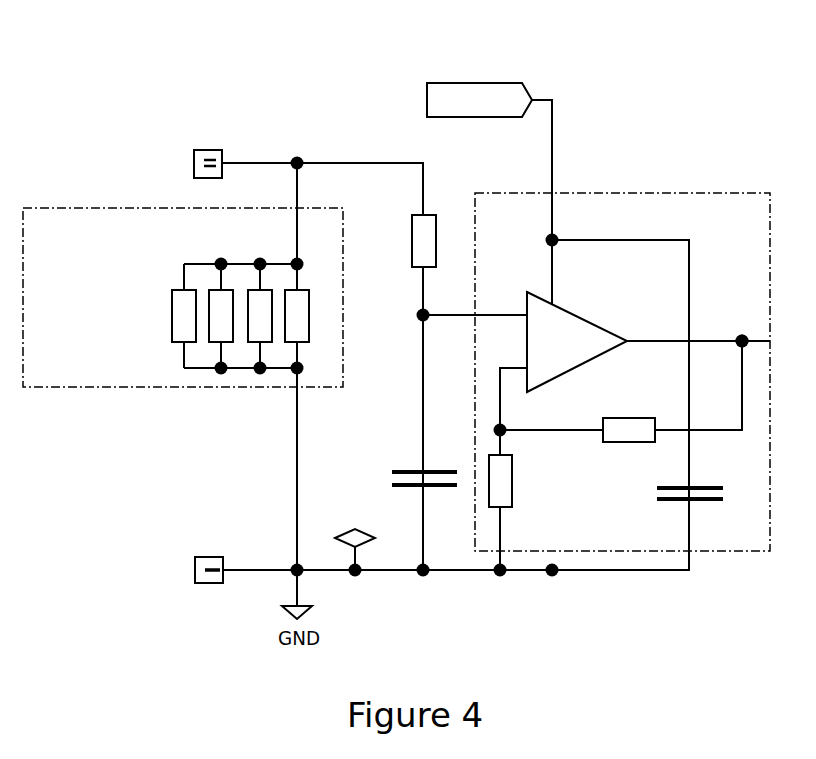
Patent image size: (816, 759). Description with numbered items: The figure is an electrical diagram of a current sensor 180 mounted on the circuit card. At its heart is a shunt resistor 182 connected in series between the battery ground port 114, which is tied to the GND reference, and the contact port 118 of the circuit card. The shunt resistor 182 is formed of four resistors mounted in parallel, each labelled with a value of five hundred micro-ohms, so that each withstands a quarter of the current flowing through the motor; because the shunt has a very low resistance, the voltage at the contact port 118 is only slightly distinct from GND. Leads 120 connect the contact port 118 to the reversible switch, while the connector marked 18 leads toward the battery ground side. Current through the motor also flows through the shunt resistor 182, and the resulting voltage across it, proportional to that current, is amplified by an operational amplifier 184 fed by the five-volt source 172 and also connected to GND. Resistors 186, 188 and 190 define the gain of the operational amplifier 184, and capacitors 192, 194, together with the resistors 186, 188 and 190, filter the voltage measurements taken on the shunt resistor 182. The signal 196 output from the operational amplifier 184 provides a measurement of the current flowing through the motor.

The connector to current sensor 18 is at (195, 567).
The battery ground port 114 is at (216, 557).
The contact port 118 is at (216, 150).
The leads 120 is at (194, 160).
The 5-volt source 172 is at (505, 83).
The current sensor 180 is at (690, 80).
The shunt resistor 182 is at (214, 323).
The operational amplifier 184 is at (608, 354).
The resistor 186 is at (627, 442).
The resistor 188 is at (512, 478).
The resistor 190 is at (412, 226).
The capacitor 192 is at (704, 488).
The capacitor 194 is at (392, 472).
The signal 196 is at (746, 334).